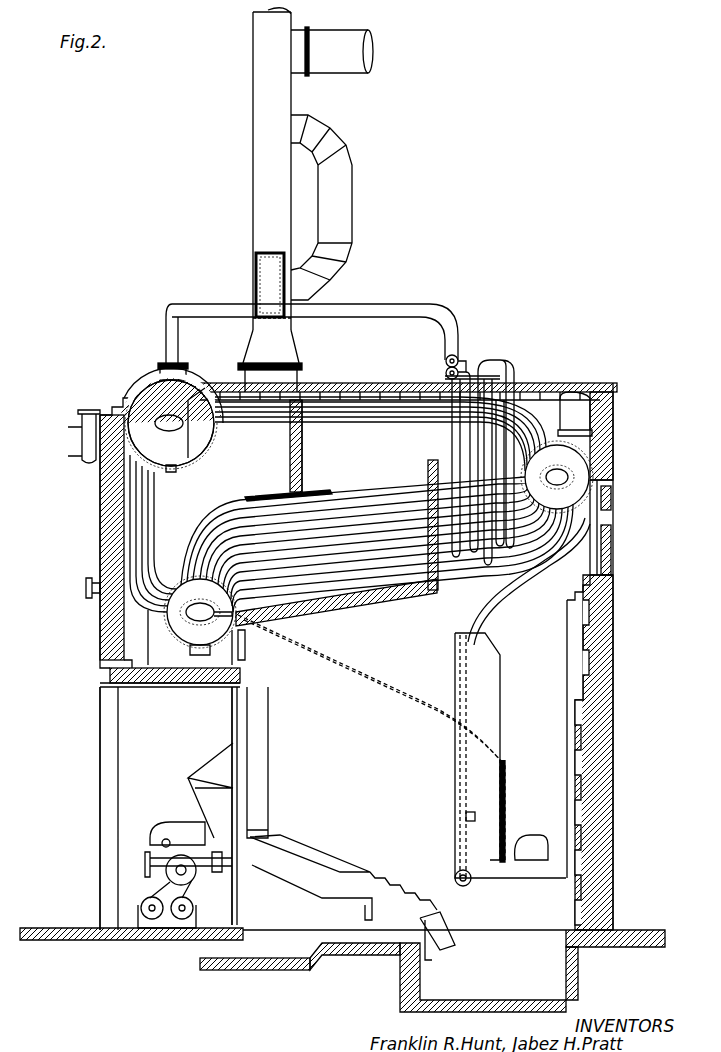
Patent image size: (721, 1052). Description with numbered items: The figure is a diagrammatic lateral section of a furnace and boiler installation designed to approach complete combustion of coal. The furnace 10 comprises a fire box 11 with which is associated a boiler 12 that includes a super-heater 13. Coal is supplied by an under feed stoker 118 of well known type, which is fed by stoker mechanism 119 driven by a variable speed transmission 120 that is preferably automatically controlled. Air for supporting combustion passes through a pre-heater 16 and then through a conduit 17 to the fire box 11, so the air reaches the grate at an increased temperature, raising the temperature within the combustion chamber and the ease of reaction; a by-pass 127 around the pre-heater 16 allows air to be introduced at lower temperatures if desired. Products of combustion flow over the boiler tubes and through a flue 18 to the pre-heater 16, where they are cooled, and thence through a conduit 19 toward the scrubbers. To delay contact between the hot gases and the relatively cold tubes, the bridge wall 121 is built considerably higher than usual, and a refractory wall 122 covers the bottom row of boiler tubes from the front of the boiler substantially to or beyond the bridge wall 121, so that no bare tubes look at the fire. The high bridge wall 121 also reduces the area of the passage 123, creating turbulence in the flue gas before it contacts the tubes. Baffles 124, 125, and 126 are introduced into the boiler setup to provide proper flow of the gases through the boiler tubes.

The furnace 10 is at (68, 743).
The fire box 11 is at (301, 806).
The boiler 12 is at (87, 500).
The super-heater 13 is at (505, 371).
The pre-heater 16 is at (232, 128).
The conduit 17 is at (262, 266).
The flue 18 is at (285, 350).
The conduit 19 is at (358, 48).
The under feed stoker 118 is at (325, 858).
The stoker mechanism 119 is at (181, 836).
The variable speed transmission 120 is at (160, 926).
The bridge wall 121 is at (488, 692).
The refractory wall 122 is at (360, 602).
The passage 123 is at (442, 606).
The baffle 124 is at (427, 471).
The baffle 125 is at (302, 470).
The baffle 126 is at (255, 505).
The by-pass 127 is at (340, 198).